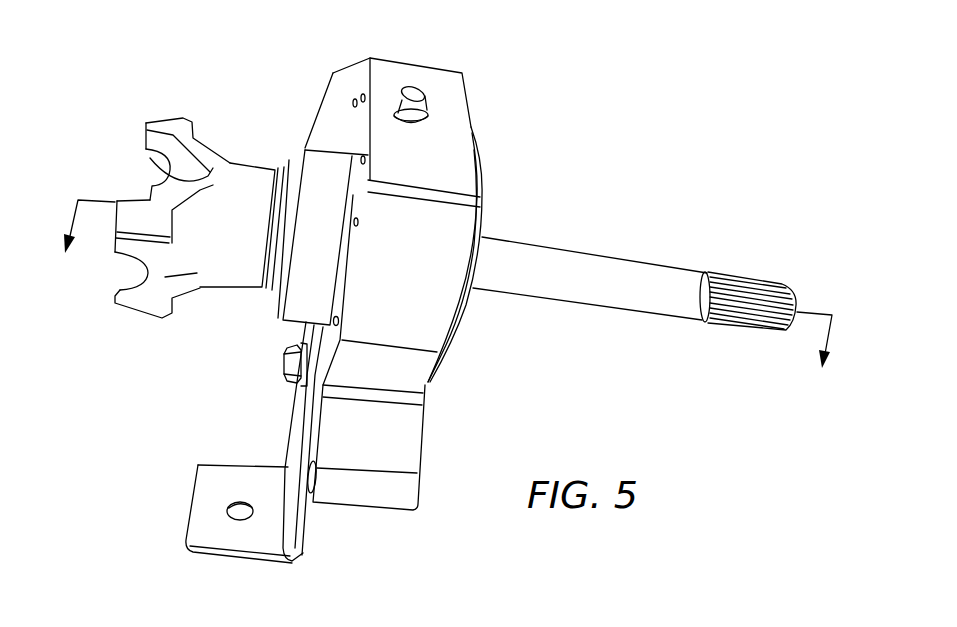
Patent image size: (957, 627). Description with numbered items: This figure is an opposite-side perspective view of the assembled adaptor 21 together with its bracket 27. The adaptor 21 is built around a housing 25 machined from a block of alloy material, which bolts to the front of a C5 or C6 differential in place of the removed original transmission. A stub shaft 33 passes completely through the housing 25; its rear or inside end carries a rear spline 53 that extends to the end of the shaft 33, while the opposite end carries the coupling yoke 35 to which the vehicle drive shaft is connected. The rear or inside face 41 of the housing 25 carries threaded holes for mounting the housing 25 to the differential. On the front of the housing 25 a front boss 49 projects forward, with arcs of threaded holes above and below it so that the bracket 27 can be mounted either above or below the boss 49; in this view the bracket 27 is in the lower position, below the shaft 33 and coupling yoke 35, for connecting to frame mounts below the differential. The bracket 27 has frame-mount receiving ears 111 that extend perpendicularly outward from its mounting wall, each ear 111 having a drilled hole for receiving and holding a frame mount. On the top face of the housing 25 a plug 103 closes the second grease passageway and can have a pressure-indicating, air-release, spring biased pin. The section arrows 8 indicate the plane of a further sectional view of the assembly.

The section line 8- 8 is at (442, 297).
The adaptor 21 is at (565, 168).
The housing 25 is at (398, 269).
The bracket 27 is at (268, 424).
The stub shaft 33 is at (562, 283).
The coupling yoke 35 is at (199, 239).
The rear/inside face 41 is at (328, 141).
The front boss 49 is at (311, 218).
The rear spline 53 is at (740, 275).
The plug 103 is at (417, 110).
The frame-mount receiving ears 111 is at (200, 489).